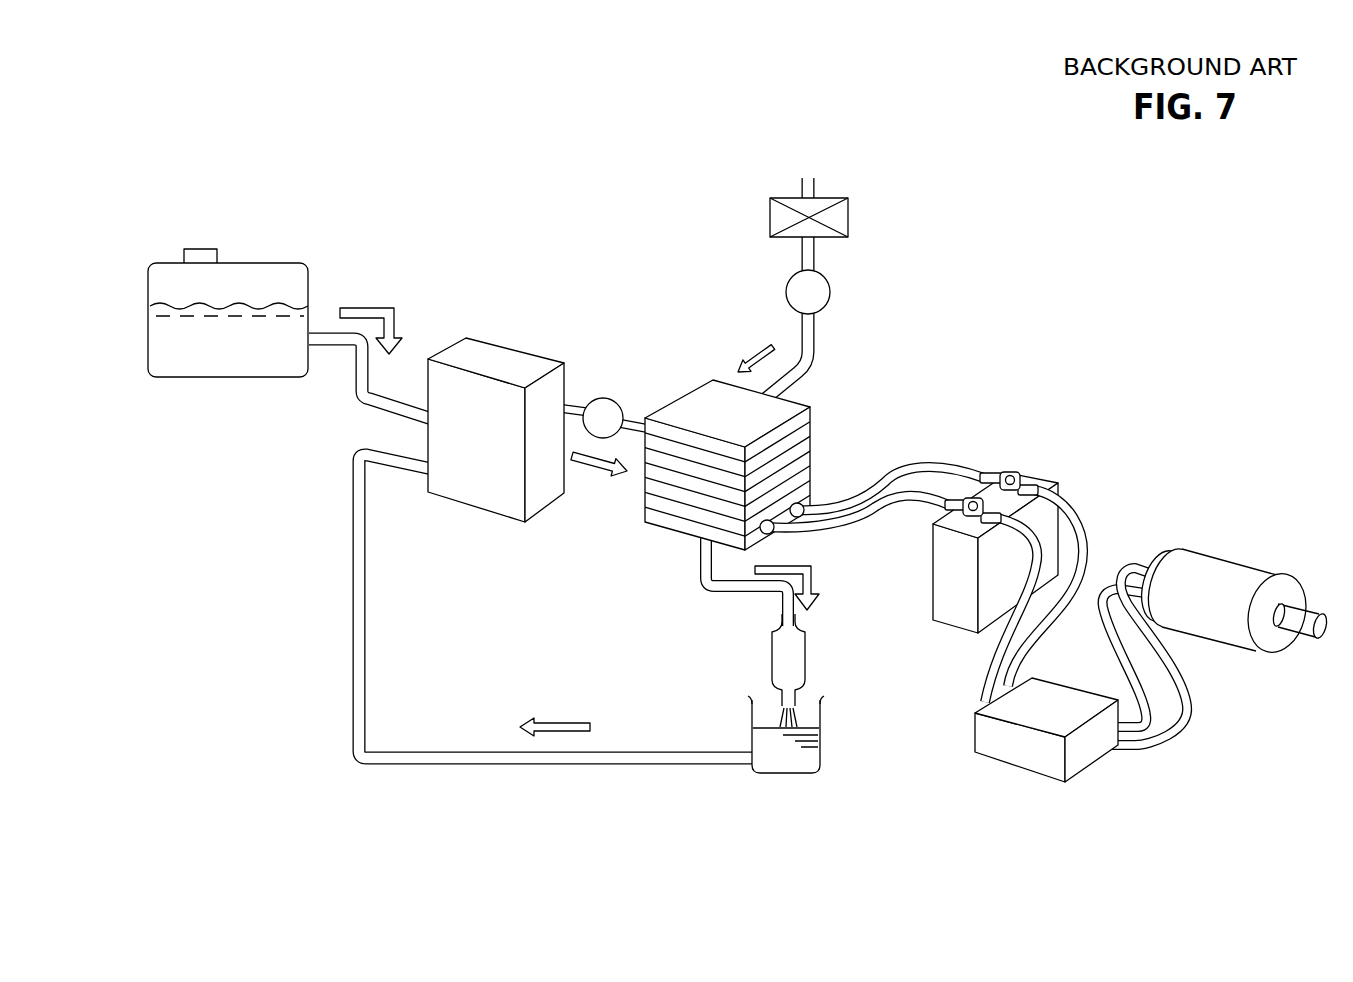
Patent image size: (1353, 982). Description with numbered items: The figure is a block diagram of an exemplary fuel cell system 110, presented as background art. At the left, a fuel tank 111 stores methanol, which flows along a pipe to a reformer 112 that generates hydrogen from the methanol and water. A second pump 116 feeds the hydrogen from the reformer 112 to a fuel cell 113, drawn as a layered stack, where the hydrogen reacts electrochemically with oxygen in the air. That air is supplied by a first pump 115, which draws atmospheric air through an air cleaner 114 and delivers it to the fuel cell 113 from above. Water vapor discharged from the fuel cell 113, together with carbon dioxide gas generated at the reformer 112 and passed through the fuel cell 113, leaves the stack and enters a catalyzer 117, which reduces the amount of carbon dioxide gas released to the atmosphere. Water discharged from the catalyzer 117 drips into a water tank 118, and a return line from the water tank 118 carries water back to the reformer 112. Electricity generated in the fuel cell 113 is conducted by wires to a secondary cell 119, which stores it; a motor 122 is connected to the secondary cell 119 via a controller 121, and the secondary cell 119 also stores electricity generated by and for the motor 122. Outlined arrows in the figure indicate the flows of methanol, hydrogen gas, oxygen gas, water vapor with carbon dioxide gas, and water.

The fuel cell system 110 is at (1128, 203).
The fuel tank 111 is at (258, 263).
The reformer 112 is at (498, 345).
The fuel cell 113 is at (793, 398).
The air cleaner 114 is at (848, 213).
The first pump 115 is at (830, 293).
The second pump 116 is at (607, 398).
The catalyzer 117 is at (805, 647).
The water tank 118 is at (820, 717).
The secondary cell 119 is at (1040, 478).
The controller 121 is at (993, 762).
The motor 122 is at (1235, 564).